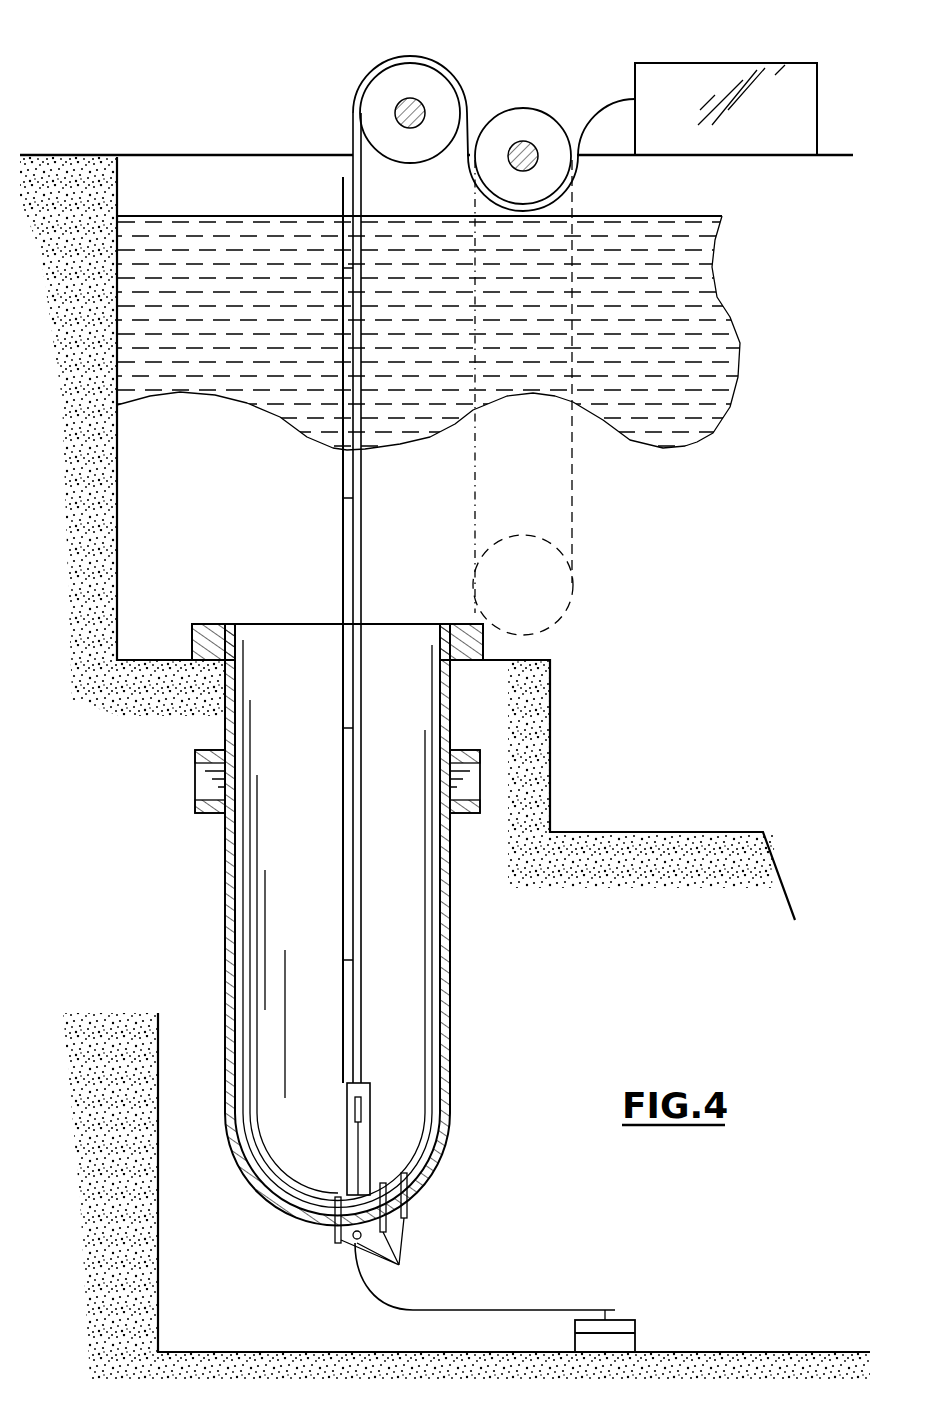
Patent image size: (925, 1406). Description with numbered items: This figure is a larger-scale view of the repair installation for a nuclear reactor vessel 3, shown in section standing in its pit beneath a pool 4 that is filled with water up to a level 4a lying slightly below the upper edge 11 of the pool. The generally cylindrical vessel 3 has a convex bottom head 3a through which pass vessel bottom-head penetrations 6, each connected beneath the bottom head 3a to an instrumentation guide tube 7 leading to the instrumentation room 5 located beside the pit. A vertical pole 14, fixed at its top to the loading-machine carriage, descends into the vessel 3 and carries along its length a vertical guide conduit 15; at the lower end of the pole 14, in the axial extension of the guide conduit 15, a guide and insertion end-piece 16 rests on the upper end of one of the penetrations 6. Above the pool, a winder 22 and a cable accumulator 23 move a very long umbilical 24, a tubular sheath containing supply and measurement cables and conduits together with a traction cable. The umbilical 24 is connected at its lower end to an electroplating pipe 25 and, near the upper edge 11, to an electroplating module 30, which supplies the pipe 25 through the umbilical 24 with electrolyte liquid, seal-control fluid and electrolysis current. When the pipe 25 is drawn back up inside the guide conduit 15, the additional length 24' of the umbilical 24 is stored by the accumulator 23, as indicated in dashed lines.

The nuclear reactor vessel 3 is at (452, 908).
The convex bottom head 3a is at (262, 1195).
The pool 4 is at (647, 831).
The water level 4a is at (160, 217).
The instrumentation room 5 is at (445, 768).
The vessel bottom-head penetrations 6 is at (377, 1236).
The instrumentation guide tube 7 is at (512, 1308).
The upper edge of the pool 11 is at (60, 170).
The vertical pole 14 is at (343, 540).
The vertical guide conduit 15 is at (362, 563).
The guide and insertion end-piece 16 is at (350, 1165).
The winder 22 is at (390, 87).
The cable accumulator 23 is at (553, 158).
The umbilical 24 is at (456, 132).
The additional length of the umbilical 24' is at (563, 386).
The electroplating pipe 25 is at (355, 1137).
The electroplating module 30 is at (680, 85).